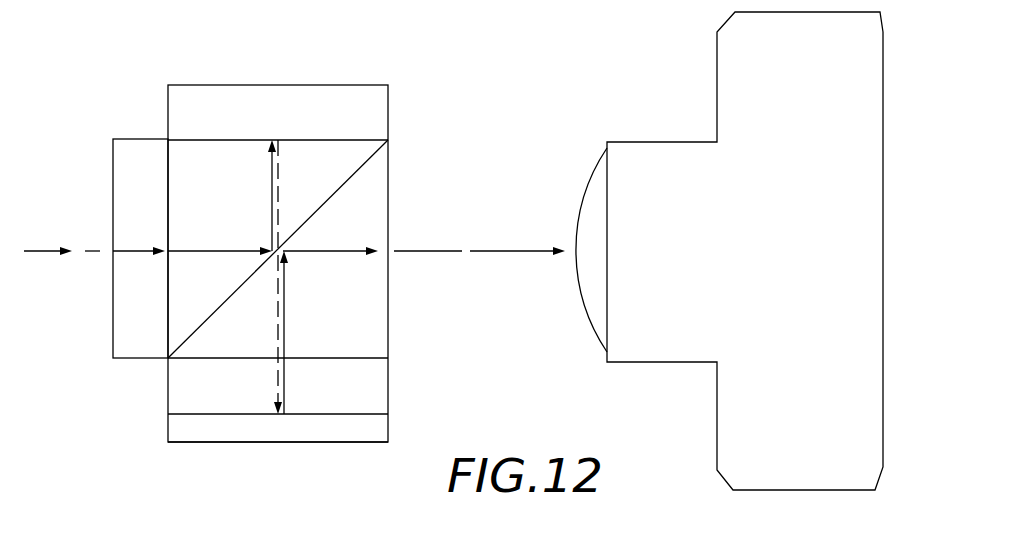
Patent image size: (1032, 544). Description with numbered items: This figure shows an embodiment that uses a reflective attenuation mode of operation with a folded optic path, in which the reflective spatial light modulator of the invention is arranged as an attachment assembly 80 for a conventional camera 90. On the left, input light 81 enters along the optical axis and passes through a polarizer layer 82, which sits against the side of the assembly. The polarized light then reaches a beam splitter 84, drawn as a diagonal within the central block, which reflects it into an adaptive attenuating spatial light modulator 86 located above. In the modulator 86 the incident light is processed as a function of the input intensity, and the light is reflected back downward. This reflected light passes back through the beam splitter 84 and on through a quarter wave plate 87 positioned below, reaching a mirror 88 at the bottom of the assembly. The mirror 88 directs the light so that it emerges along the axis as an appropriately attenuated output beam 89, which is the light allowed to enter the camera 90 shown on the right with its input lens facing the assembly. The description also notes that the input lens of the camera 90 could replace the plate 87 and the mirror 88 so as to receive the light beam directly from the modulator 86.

The attachment assembly 80 is at (273, 257).
The input light 81 is at (38, 250).
The polarizer layer 82 is at (143, 163).
The beam splitter 84 is at (366, 200).
The adaptive attenuating spatial light modulator 86 is at (358, 107).
The quarter wave plate 87 is at (192, 388).
The mirror 88 is at (320, 430).
The output beam 89 is at (500, 255).
The conventional camera 90 is at (745, 72).